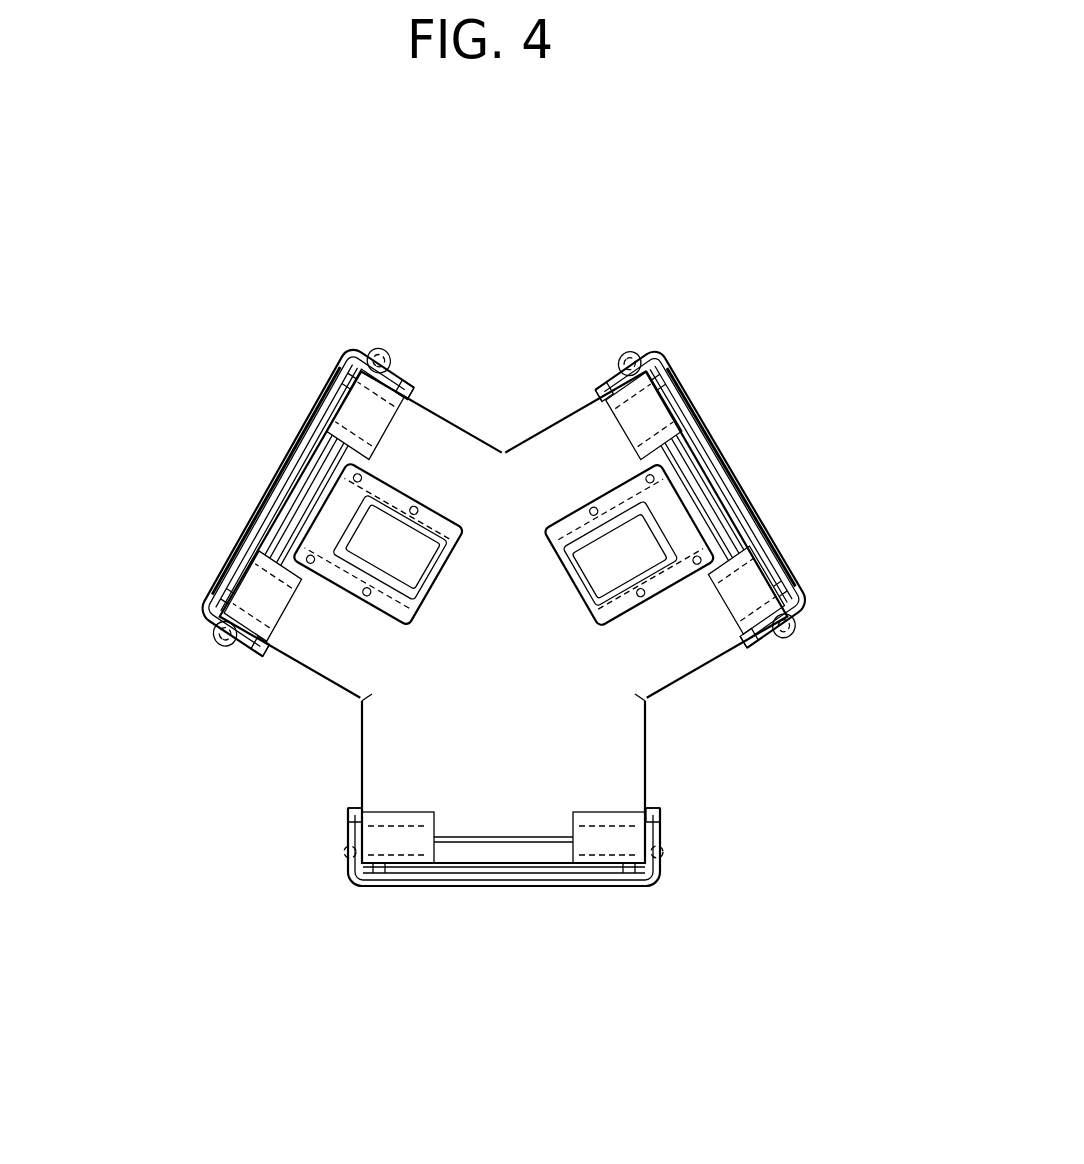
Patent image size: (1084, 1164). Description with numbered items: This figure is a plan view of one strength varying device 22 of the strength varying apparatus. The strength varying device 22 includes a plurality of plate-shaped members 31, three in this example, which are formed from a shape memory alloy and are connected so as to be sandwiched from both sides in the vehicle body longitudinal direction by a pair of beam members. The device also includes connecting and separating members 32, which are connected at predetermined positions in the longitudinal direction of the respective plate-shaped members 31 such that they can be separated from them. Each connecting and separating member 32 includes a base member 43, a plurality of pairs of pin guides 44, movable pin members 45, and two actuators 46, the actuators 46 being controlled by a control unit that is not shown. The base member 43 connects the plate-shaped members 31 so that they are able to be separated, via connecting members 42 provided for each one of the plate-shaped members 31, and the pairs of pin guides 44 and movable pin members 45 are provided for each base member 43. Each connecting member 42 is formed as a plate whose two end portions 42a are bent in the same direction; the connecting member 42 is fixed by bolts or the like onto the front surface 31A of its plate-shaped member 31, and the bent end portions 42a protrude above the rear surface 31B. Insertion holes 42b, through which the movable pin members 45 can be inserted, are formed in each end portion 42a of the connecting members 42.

The strength varying device 22 is at (726, 282).
The plate-shaped member 31 is at (278, 468).
The front surface 31A is at (262, 488).
The rear surface 31B is at (288, 540).
The connecting and separating member 32 is at (352, 732).
The connecting member 42 is at (200, 600).
The end portion 42a is at (594, 386).
The insertion hole 42b is at (630, 367).
The base member 43 is at (362, 700).
The pin guide 44 is at (385, 420).
The movable pin member 45 is at (386, 357).
The actuator 46 is at (607, 607).